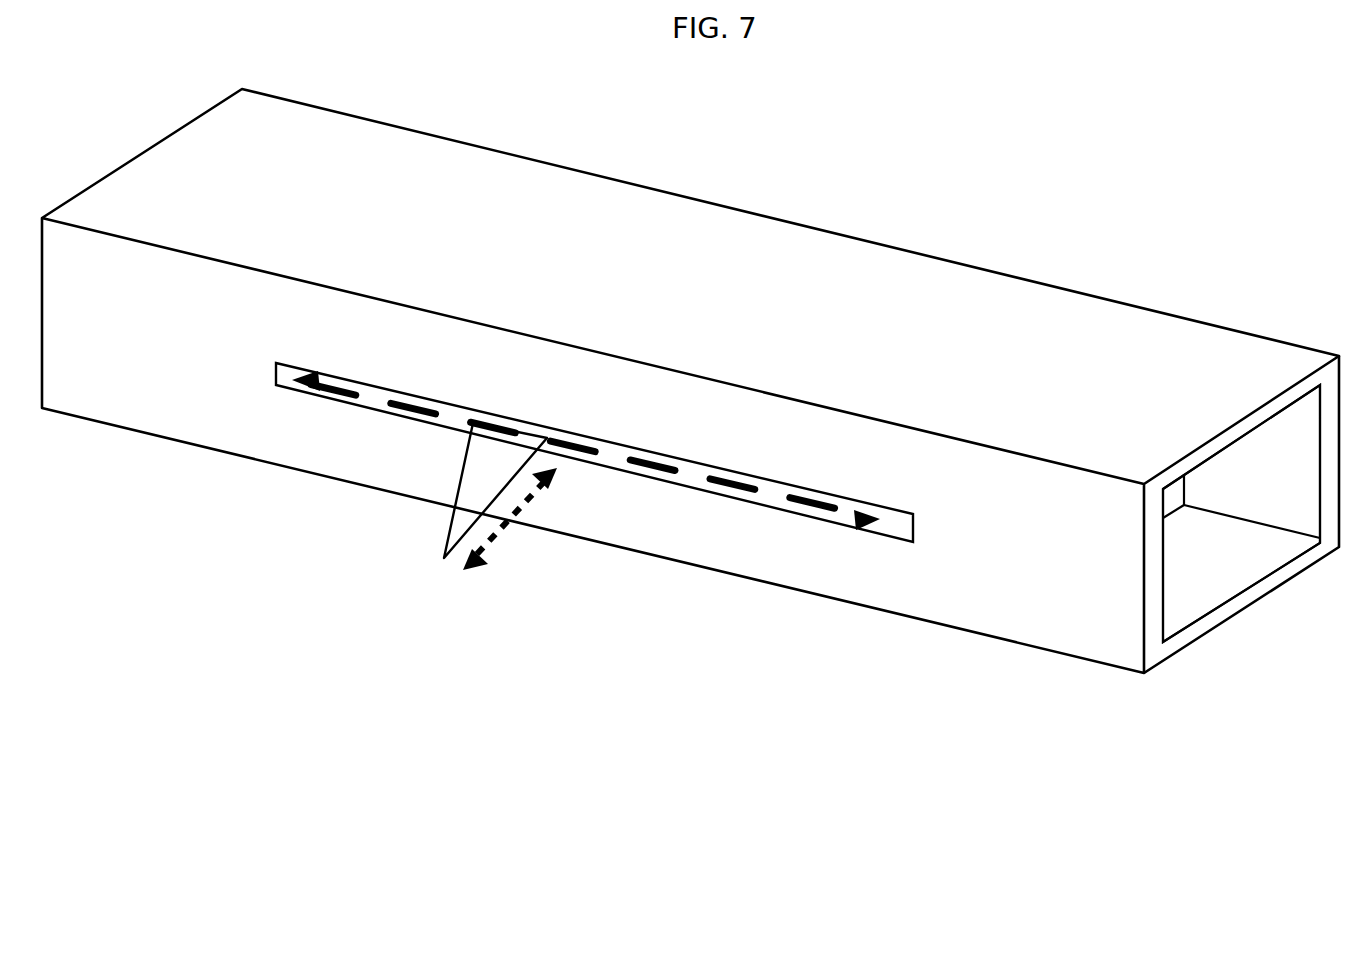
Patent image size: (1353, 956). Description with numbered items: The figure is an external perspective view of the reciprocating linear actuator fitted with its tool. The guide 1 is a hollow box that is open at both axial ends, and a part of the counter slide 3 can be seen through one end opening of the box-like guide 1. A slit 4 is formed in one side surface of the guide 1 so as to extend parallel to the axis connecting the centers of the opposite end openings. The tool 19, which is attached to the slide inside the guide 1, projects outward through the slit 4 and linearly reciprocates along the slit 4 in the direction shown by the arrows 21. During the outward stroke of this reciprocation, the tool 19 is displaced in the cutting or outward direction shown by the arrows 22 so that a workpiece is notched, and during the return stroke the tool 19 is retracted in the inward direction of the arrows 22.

The guide 1 is at (813, 285).
The counter slide 3 is at (1175, 497).
The slit 4 is at (602, 467).
The tool 19 is at (460, 482).
The arrows 21 is at (318, 387).
The arrows 22 is at (487, 547).